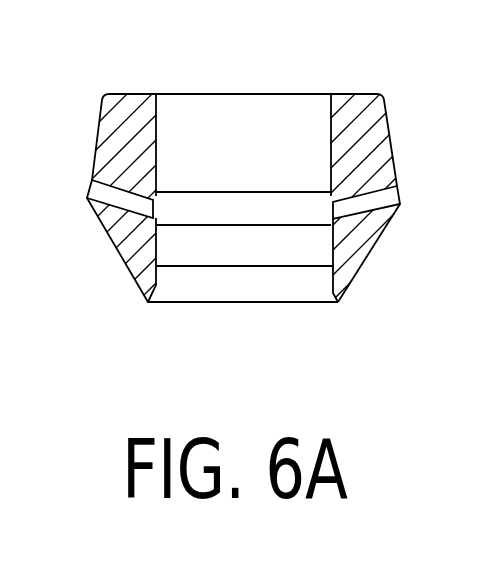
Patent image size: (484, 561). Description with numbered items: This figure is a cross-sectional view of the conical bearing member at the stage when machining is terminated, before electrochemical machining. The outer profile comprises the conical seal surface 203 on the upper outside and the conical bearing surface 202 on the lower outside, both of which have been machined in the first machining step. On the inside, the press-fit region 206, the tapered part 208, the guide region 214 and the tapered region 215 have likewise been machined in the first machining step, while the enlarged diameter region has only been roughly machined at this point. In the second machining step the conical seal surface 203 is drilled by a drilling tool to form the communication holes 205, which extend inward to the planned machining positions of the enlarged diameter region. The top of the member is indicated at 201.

The top surface of nozzle body 201 is at (120, 93).
The lower side wall 202 is at (360, 265).
The upper side wall 203 is at (93, 140).
The slot 205 is at (110, 197).
The inner wall surface 206 is at (158, 153).
The intermediate step 208 is at (160, 195).
The lower inner surface 214 is at (313, 267).
The bottom surface 215 is at (203, 285).